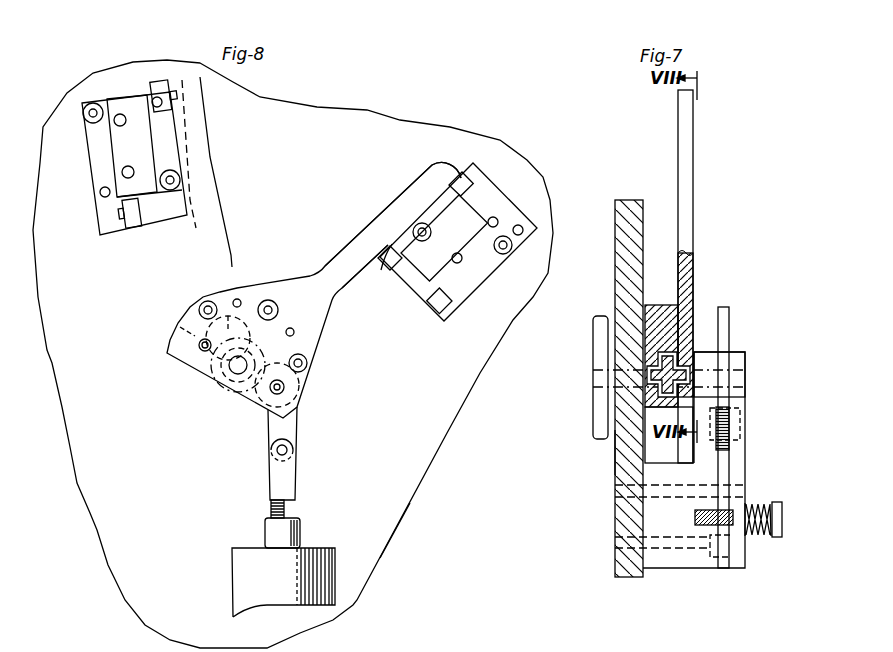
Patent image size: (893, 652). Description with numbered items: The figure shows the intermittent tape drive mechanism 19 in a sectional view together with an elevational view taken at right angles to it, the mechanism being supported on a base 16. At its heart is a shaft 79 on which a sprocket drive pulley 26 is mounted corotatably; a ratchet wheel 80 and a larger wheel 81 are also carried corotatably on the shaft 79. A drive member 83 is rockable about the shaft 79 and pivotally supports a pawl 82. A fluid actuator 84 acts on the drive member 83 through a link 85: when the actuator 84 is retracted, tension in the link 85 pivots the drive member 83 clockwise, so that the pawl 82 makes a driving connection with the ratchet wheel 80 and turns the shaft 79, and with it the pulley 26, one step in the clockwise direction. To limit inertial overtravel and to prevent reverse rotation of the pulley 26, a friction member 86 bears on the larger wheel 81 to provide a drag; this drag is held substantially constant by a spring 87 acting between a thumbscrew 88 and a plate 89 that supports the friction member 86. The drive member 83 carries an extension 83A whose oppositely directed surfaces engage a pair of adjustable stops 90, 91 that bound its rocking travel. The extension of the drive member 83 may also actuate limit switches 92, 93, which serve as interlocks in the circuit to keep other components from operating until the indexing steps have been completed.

In FIG. 8, the base plate 16 is at (393, 533).
In FIG. 7, the base plate 16 is at (626, 474).
In FIG. 8, the intermittent tape drive mechanism 19 is at (432, 490).
In FIG. 7, the intermittent tape drive mechanism 19 is at (600, 454).
In FIG. 7, the sprocket drive pulley 26 is at (592, 398).
In FIG. 8, the shaft 79 is at (236, 368).
In FIG. 7, the shaft 79 is at (739, 377).
In FIG. 8, the ratchet wheel 80 is at (212, 376).
In FIG. 7, the ratchet wheel 80 is at (668, 353).
In FIG. 7, the larger wheel 81 is at (726, 331).
In FIG. 8, the pawl 82 is at (236, 281).
In FIG. 8, the drive member 83 is at (255, 297).
In FIG. 7, the drive member 83 is at (681, 322).
In FIG. 8, the extension 83A is at (400, 197).
In FIG. 8, the fluid actuator 84 is at (317, 557).
In FIG. 8, the link 85 is at (295, 428).
In FIG. 7, the friction member 86 is at (746, 433).
In FIG. 7, the spring 87 is at (756, 506).
In FIG. 7, the thumbscrew 88 is at (783, 515).
In FIG. 7, the plate 89 is at (735, 460).
In FIG. 8, the adjustable stop 90 is at (390, 265).
In FIG. 8, the adjustable stop 91 is at (199, 206).
In FIG. 8, the limit switch 92 is at (495, 200).
In FIG. 8, the limit switch 93 is at (128, 104).